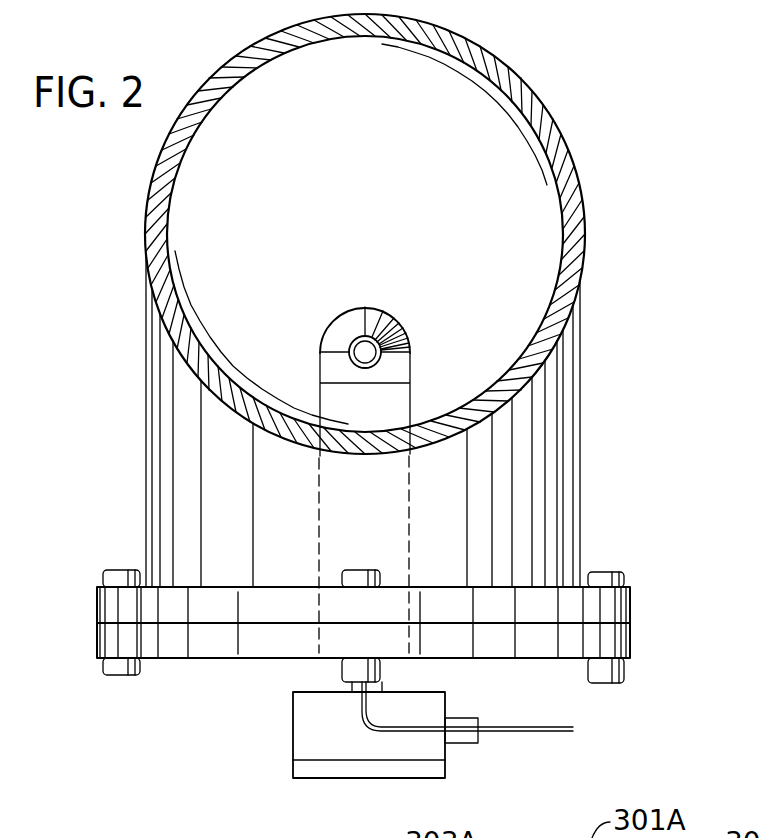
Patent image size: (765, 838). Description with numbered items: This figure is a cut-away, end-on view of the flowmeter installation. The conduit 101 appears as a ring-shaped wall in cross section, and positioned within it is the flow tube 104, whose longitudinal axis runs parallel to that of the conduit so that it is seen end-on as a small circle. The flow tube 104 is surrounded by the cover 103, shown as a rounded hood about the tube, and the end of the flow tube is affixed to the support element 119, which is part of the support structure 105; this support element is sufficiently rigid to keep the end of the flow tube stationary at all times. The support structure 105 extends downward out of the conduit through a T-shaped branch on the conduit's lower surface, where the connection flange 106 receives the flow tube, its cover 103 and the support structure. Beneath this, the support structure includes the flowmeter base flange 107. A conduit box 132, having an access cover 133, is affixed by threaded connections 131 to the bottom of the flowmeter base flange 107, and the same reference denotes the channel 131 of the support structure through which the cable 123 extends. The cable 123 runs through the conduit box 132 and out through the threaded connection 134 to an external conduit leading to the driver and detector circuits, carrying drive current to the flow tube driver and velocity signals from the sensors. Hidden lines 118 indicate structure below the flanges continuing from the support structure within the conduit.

The conduit 101 is at (562, 131).
The cover 103 is at (342, 314).
The flow tube 104 is at (349, 352).
The support structure 105 is at (378, 405).
The connection flange 106 is at (630, 608).
The flowmeter base flange 107 is at (632, 645).
The shaft extension (hidden) 118 is at (385, 634).
The support element 119 is at (395, 372).
The cable 123 is at (517, 737).
The channel 131 is at (355, 690).
The conduit box 132 is at (303, 742).
The access cover 133 is at (340, 779).
The threaded connection 134 is at (475, 715).